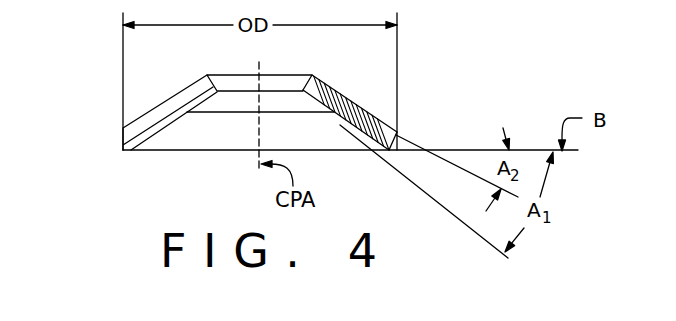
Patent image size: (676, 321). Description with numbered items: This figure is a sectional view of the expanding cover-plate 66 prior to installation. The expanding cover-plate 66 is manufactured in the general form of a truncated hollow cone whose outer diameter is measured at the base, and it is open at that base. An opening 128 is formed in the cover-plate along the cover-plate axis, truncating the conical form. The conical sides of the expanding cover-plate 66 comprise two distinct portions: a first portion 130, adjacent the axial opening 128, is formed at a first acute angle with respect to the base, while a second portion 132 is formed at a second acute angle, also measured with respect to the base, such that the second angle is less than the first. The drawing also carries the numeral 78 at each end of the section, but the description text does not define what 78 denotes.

The expanding cover-plate 66 is at (338, 153).
The outer edge 78 is at (117, 135).
The opening 128 is at (292, 72).
The first portion 130 is at (328, 84).
The second portion 132 is at (378, 118).